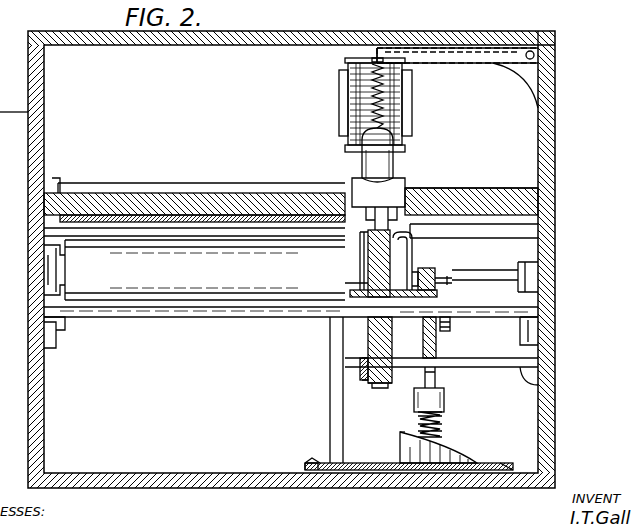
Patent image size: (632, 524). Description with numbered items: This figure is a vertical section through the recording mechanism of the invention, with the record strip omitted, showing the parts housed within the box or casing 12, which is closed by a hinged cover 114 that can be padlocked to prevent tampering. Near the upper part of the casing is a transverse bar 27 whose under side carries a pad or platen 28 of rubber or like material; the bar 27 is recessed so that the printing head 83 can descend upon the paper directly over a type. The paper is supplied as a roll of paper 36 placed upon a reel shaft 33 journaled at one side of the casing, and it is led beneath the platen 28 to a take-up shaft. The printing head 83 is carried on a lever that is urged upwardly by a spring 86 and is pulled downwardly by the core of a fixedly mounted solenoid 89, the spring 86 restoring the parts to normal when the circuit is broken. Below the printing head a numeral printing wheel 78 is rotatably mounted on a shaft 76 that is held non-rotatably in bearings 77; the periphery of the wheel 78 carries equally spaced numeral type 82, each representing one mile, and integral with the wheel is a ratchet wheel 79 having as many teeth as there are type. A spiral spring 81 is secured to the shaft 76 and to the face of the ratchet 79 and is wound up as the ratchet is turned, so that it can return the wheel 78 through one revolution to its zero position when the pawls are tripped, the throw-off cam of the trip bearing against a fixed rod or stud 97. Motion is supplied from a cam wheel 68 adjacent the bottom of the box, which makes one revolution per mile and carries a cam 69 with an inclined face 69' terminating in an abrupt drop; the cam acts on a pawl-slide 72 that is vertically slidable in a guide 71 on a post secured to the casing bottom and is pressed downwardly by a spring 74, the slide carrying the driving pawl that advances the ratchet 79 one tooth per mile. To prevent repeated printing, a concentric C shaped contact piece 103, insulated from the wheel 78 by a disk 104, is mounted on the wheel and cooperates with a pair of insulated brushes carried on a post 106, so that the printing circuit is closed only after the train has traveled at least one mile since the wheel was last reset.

The box or casing 12 is at (224, 489).
The hinged cover 114 is at (556, 34).
The transverse bar 27 is at (193, 193).
The pad or platen 28 is at (121, 213).
The reel shaft 33 is at (545, 273).
The roll of paper 36 is at (258, 271).
The cam wheel 68 is at (305, 462).
The cam 69 is at (409, 489).
The inclined face 69' is at (452, 445).
The guide 71 is at (445, 395).
The pawl-slide 72 is at (440, 380).
The spring 74 is at (442, 418).
The shaft 76 is at (223, 318).
The bearings 77 is at (57, 340).
The numeral printing wheel 78 is at (392, 255).
The ratchet wheel 79 is at (433, 270).
The spiral spring 81 is at (448, 332).
The numeral type 82 is at (380, 388).
The printing head 83 is at (368, 160).
The spring 86 is at (405, 97).
The solenoid 89 is at (348, 103).
The fixed rod or stud 97 is at (552, 373).
The C shaped contact piece 103 is at (362, 370).
The disk 104 is at (365, 380).
The post 106 is at (332, 371).